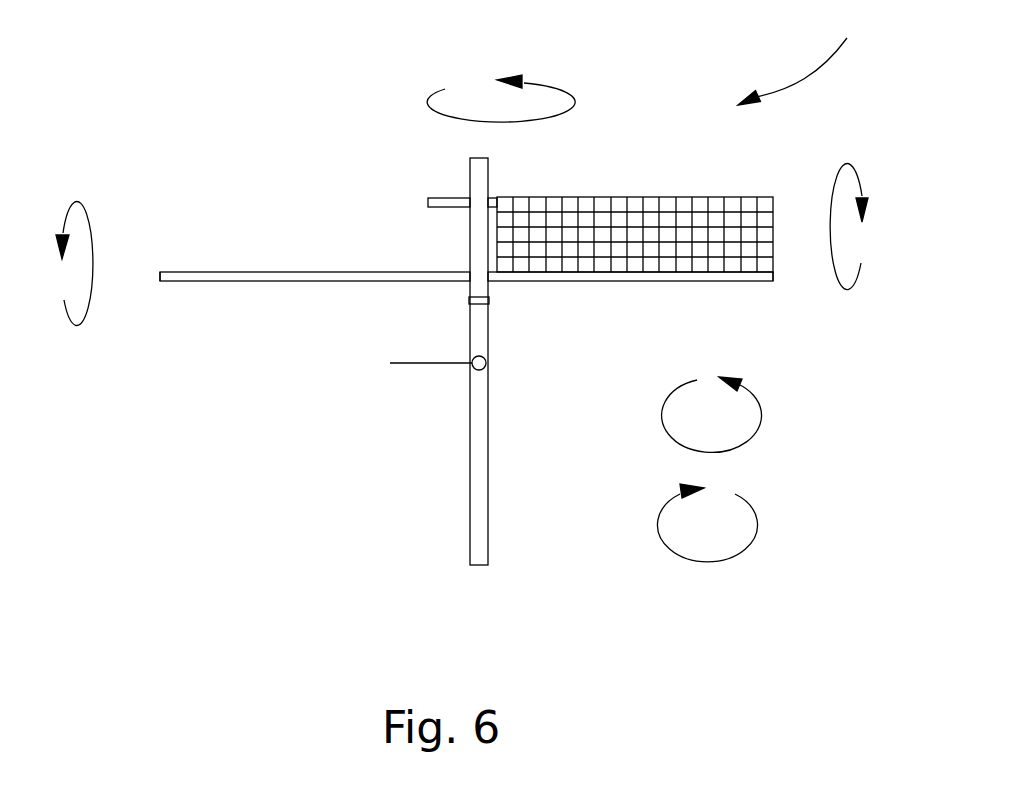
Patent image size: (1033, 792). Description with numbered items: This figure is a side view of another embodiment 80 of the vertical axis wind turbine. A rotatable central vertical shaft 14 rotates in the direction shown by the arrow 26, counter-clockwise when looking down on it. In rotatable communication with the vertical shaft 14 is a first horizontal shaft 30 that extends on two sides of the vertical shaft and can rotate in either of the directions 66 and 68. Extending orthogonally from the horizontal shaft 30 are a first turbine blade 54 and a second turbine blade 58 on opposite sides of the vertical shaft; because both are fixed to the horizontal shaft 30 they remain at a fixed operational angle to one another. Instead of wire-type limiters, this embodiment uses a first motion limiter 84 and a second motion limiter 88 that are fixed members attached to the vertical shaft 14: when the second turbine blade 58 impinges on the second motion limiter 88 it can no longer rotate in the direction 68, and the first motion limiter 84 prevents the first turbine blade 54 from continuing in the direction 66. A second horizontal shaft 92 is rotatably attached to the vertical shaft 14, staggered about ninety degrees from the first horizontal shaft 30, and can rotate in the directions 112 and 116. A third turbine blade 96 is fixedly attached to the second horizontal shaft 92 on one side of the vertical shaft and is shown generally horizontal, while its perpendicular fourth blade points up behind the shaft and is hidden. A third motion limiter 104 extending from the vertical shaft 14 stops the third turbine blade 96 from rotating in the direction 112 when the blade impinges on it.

The vertical shaft 14 is at (470, 508).
The arrow 26 is at (415, 95).
The horizontal shaft 30 is at (186, 283).
The first turbine blade 54 is at (223, 272).
The second turbine blade 58 is at (746, 206).
The direction 66 is at (87, 217).
The direction 68 is at (852, 166).
The embodiment 80 is at (804, 57).
The first motion limiter 84 is at (453, 197).
The second motion limiter 88 is at (495, 196).
The second horizontal shaft 92 is at (481, 371).
The third turbine blade 96 is at (398, 365).
The third motion limiter 104 is at (489, 300).
The direction 112 is at (733, 556).
The direction 116 is at (757, 430).